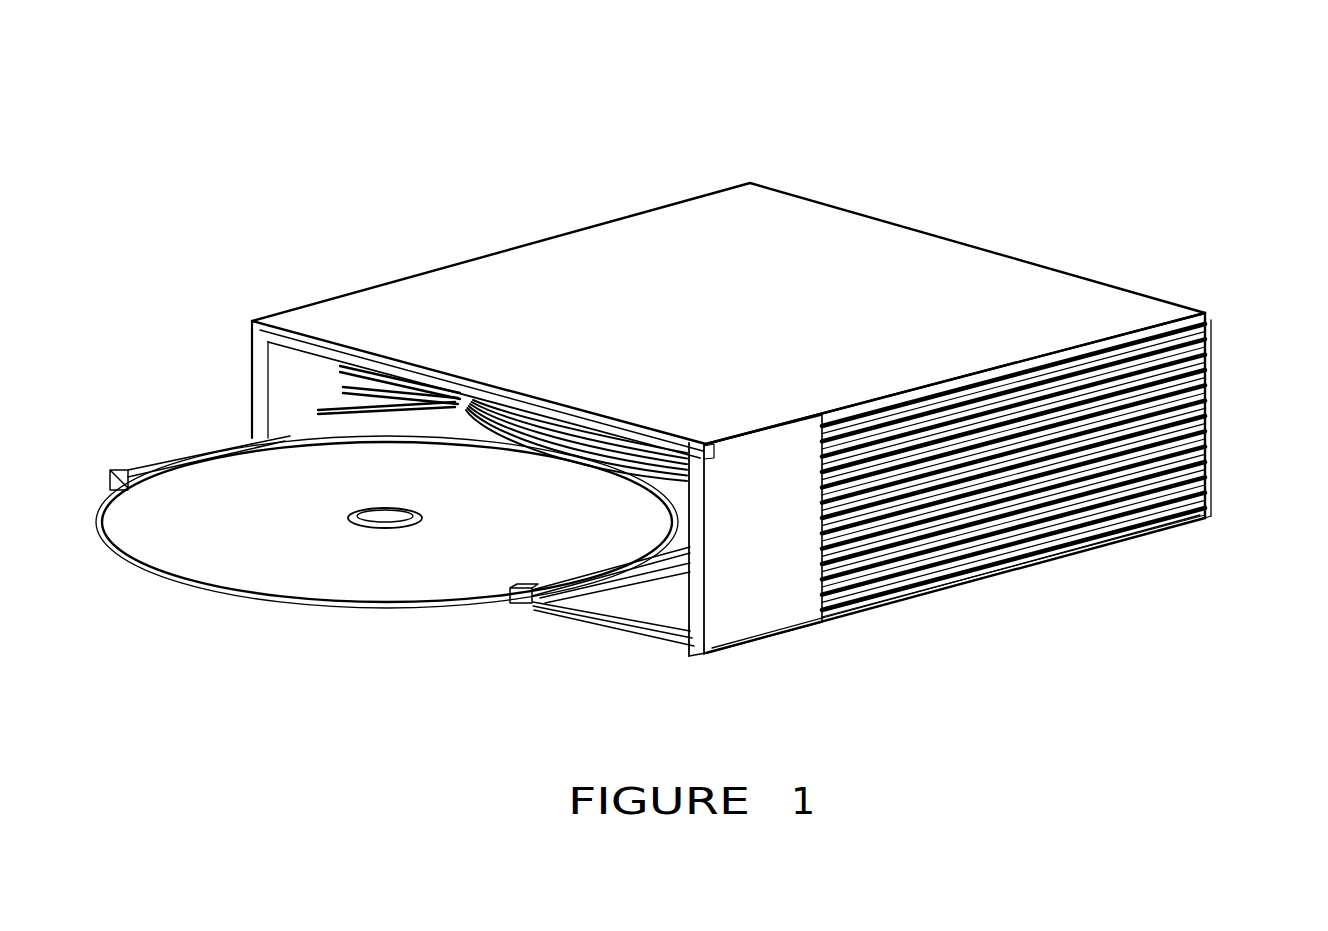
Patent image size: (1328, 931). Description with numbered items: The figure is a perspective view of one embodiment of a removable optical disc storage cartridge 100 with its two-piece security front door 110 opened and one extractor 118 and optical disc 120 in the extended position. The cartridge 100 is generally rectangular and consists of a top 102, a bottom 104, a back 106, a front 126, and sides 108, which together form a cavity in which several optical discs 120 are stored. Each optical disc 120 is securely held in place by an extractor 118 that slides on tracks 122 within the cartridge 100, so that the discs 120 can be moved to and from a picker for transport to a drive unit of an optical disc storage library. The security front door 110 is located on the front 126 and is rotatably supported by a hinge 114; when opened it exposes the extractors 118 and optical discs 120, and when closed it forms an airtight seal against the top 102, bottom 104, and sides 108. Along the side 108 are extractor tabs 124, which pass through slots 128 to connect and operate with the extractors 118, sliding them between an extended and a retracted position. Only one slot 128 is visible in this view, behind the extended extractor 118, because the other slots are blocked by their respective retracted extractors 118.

The removable optical disc storage cartridge 100 is at (365, 140).
The top 102 is at (782, 319).
The bottom 104 is at (908, 620).
The back 106 is at (1123, 261).
The sides 108 is at (598, 222).
The two-piece security front door 110 is at (264, 347).
The hinge 114 is at (720, 447).
The extractor 118 is at (514, 610).
The optical disc 120 is at (536, 410).
The tracks 122 is at (340, 370).
The extractor tabs 124 is at (1208, 312).
The front 126 is at (203, 416).
The slot 128 is at (1038, 470).